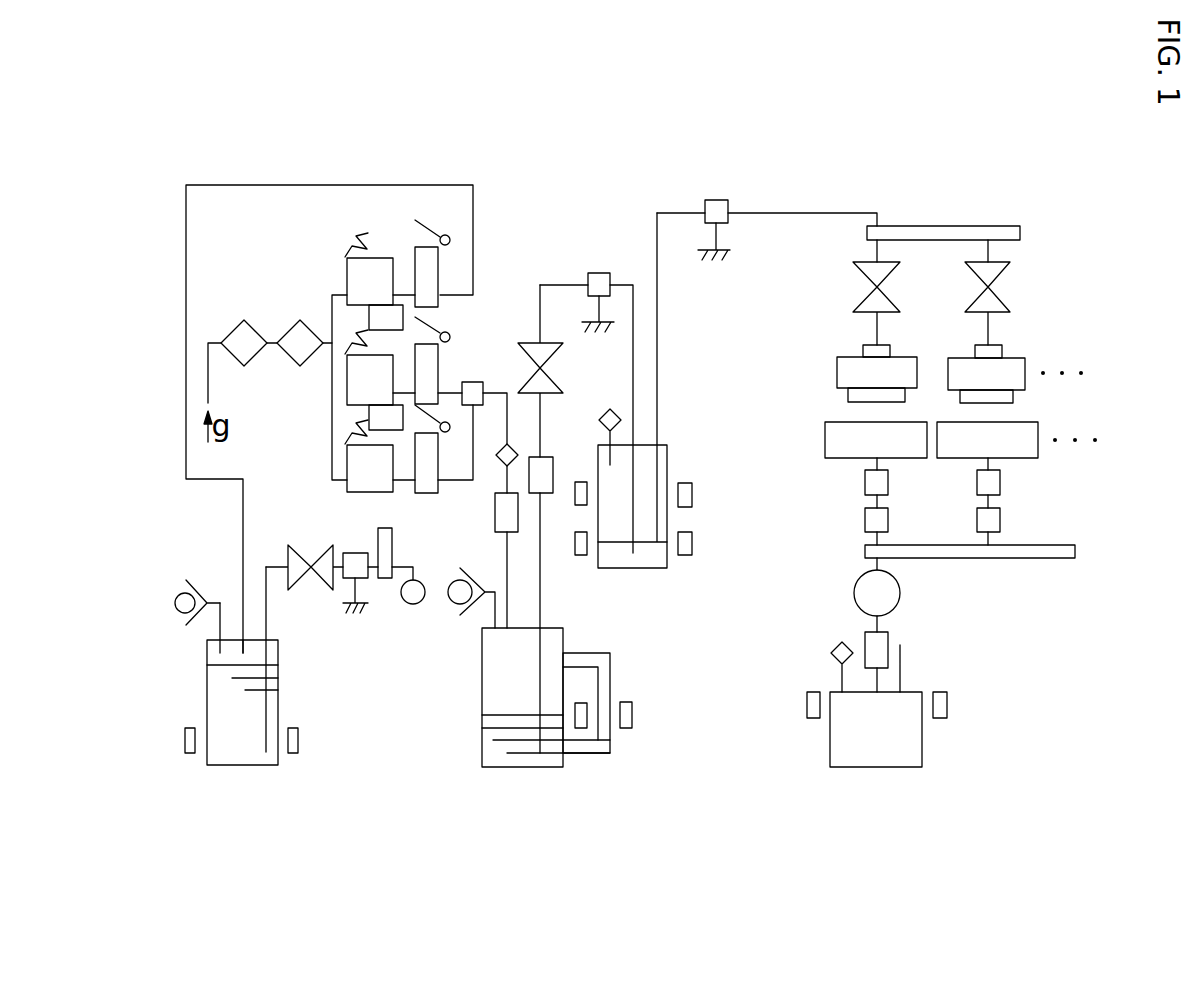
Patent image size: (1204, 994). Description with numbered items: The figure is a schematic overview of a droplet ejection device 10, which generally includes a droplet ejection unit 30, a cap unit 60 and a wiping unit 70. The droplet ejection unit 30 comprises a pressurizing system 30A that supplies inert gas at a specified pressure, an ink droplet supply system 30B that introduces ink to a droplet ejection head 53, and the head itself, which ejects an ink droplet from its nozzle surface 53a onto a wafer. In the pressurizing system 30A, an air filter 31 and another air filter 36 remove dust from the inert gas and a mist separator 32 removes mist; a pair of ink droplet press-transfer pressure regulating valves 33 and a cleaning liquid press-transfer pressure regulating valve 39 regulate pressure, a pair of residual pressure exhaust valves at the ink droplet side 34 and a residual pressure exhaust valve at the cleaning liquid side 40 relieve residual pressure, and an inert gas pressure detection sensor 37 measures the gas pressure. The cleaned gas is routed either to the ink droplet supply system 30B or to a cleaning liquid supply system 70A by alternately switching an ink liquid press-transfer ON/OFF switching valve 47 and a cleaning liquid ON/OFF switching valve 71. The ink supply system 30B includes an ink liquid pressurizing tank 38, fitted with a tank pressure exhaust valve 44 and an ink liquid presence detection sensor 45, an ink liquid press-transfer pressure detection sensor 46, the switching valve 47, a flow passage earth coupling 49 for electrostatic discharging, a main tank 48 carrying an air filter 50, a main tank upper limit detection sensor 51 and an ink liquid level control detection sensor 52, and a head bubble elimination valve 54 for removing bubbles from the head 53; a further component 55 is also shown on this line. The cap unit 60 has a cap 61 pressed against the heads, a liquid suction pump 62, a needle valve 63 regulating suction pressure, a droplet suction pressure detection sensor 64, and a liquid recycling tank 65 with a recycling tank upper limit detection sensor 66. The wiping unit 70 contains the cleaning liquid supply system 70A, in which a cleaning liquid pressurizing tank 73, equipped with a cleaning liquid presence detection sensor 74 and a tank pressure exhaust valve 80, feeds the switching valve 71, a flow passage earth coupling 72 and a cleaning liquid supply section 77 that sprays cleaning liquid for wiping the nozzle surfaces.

The droplet ejection device 10 is at (289, 153).
The droplet ejection unit 30 is at (807, 148).
The pressurizing system 30A is at (508, 193).
The ink droplet supply system 30B is at (675, 181).
The air filter 31 is at (244, 320).
The mist separator 32 is at (300, 320).
The ink droplet press-transfer pressure regulating valve 33 is at (347, 372).
The residual pressure exhaust valve at the ink droplet side 34 is at (438, 362).
The air filter 36 is at (496, 462).
The inert gas pressure detection sensor 37 is at (495, 520).
The ink liquid pressurizing tank 38 is at (482, 700).
The cleaning liquid press-transfer pressure regulating valve 39 is at (350, 258).
The residual pressure exhaust valve at the cleaning liquid side 40 is at (420, 247).
The tank pressure exhaust valve 44 is at (465, 605).
The ink liquid presence detection sensor 45 is at (626, 728).
The ink liquid press-transfer pressure detection sensor 46 is at (546, 457).
The ink liquid press-transfer ON/OFF switching valve 47 is at (530, 345).
The main tank 48 is at (647, 568).
The flow passage earth coupling 49 is at (590, 276).
The air filter 50 is at (607, 410).
The main tank upper limit detection sensor 51 is at (575, 495).
The ink liquid level control detection sensor 52 is at (583, 556).
The droplet ejection head 53 is at (845, 357).
The nozzle surface 53a is at (848, 397).
The head bubble elimination valve 54 is at (865, 297).
The valve 55 is at (718, 200).
The cap unit 60 is at (983, 757).
The cap 61 is at (825, 440).
The liquid suction pump 62 is at (854, 593).
The needle valve 63 is at (865, 522).
The droplet suction pressure detection sensor 64 is at (865, 483).
The liquid recycling tank 65 is at (830, 748).
The recycling tank upper limit detection sensor 66 is at (947, 705).
The wiping unit 70 is at (333, 816).
The cleaning liquid supply system 70A is at (347, 655).
The cleaning liquid ON/OFF switching valve 71 is at (318, 588).
The flow passage earth coupling 72 is at (368, 575).
The cleaning liquid pressurizing tank 73 is at (243, 765).
The cleaning liquid presence detection sensor 74 is at (298, 741).
The cleaning liquid supply section 77 is at (413, 604).
The tank pressure exhaust valve 80 is at (188, 592).